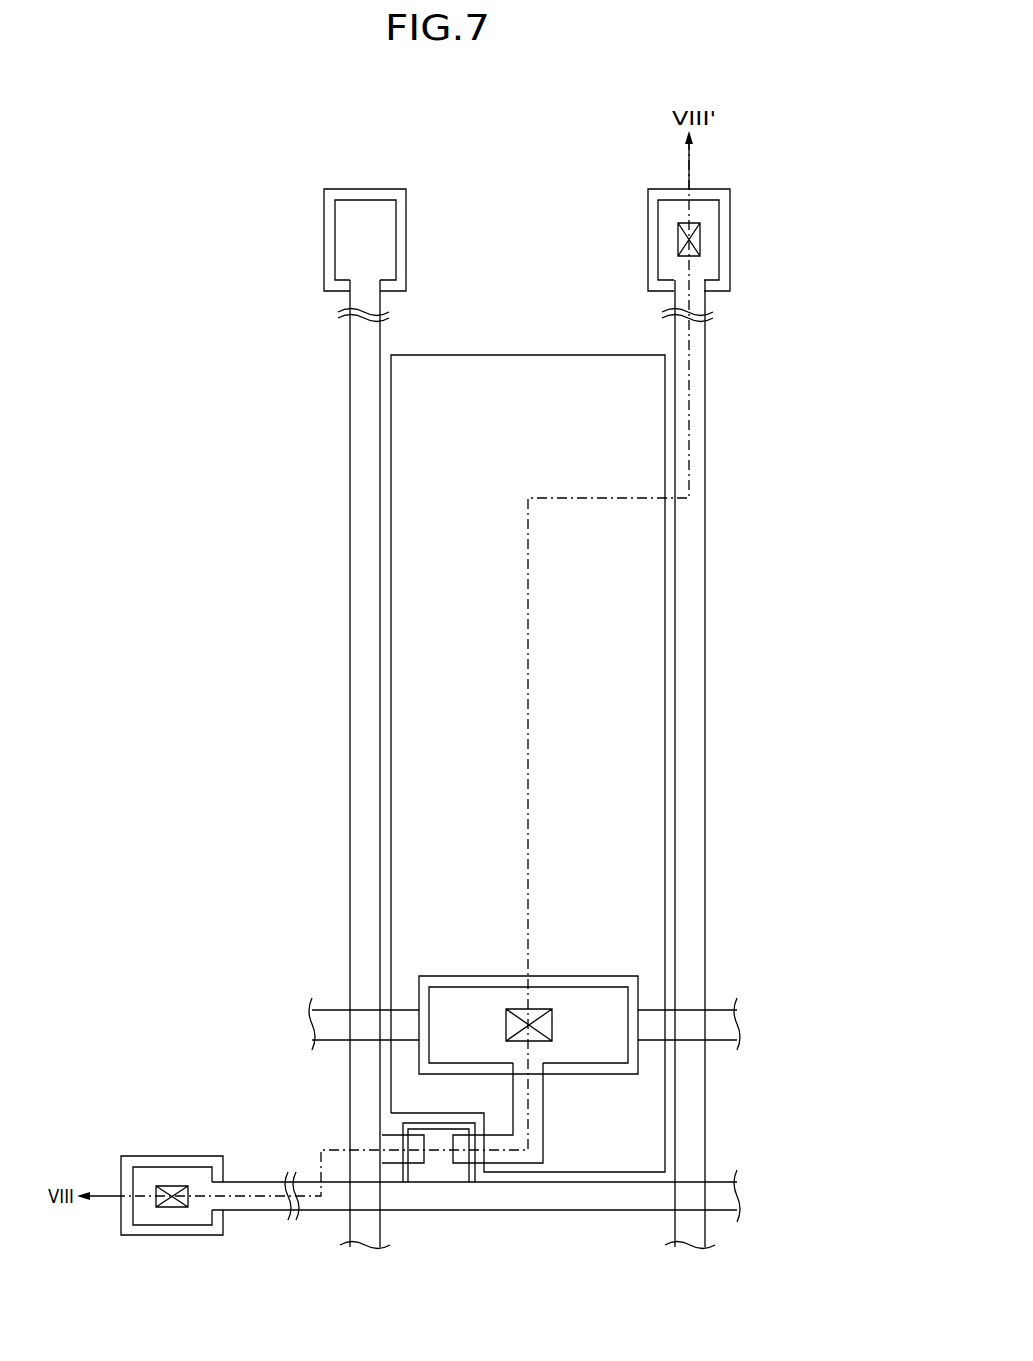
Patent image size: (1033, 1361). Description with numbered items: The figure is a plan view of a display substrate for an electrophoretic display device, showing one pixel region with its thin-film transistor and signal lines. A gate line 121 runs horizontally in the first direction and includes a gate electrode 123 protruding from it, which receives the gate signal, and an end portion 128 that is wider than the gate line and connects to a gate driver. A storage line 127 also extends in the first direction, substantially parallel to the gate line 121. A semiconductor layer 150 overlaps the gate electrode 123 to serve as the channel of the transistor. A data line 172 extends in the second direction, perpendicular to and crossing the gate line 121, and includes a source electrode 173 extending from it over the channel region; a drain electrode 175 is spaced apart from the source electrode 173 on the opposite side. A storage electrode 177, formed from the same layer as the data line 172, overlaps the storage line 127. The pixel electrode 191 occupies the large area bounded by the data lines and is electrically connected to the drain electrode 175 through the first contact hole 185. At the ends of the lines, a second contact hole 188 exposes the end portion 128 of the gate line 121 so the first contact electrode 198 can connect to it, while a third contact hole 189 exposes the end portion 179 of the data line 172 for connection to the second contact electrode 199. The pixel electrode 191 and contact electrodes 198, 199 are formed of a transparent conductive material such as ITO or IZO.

The gate line 121 is at (563, 1203).
The gate electrode 123 is at (402, 1130).
The storage line 127 is at (610, 982).
The end portion 128 is at (147, 1220).
The semiconductor layer 150 is at (470, 1170).
The data line 172 is at (708, 638).
The source electrode 173 is at (417, 1157).
The drain electrode 175 is at (460, 1157).
The storage electrode 177 is at (461, 987).
The end portion 179 is at (715, 258).
The first contact hole 185 is at (538, 1009).
The second contact hole 188 is at (172, 1186).
The third contact hole 189 is at (678, 232).
The pixel electrode 191 is at (667, 680).
The first contact electrode 198 is at (198, 1231).
The second contact electrode 199 is at (725, 222).